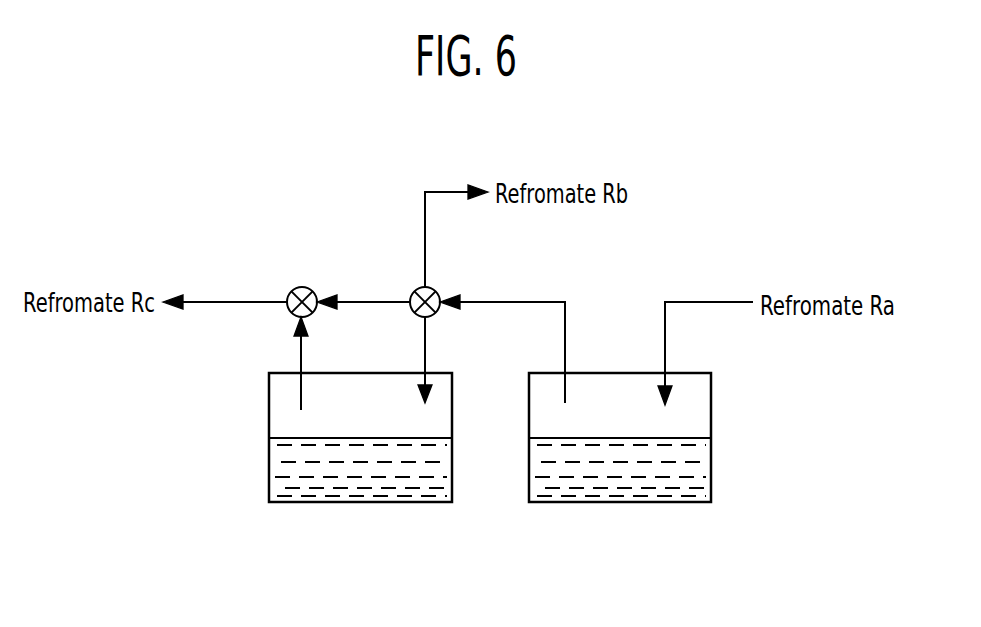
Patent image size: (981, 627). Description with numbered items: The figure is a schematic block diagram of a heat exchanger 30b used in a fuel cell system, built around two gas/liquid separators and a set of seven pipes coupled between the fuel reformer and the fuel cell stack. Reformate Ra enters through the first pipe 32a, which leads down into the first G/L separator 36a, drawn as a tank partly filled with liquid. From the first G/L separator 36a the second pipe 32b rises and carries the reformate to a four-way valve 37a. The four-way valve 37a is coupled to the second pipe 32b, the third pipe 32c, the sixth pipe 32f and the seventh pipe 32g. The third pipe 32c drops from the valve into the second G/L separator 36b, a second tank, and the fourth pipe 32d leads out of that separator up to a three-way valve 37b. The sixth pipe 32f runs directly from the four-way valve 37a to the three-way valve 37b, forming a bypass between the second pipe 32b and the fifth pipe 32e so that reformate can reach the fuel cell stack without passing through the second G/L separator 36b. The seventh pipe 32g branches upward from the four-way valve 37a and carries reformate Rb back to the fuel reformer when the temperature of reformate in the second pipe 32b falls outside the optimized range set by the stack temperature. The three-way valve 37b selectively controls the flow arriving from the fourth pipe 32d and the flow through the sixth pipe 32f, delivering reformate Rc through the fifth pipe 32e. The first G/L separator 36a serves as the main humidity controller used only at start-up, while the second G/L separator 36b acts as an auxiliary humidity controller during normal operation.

The heat exchanger 30b is at (640, 114).
The first pipe 32a is at (708, 300).
The second pipe 32b is at (536, 300).
The third pipe 32c is at (426, 335).
The fourth pipe 32d is at (300, 346).
The fifth pipe 32e is at (212, 300).
The sixth pipe 32f is at (370, 300).
The seventh pipe 32g is at (440, 190).
The first G/L separator 36a is at (588, 503).
The second G/L separator 36b is at (347, 503).
The four-way valve 37a is at (437, 291).
The three-way valve 37b is at (304, 286).